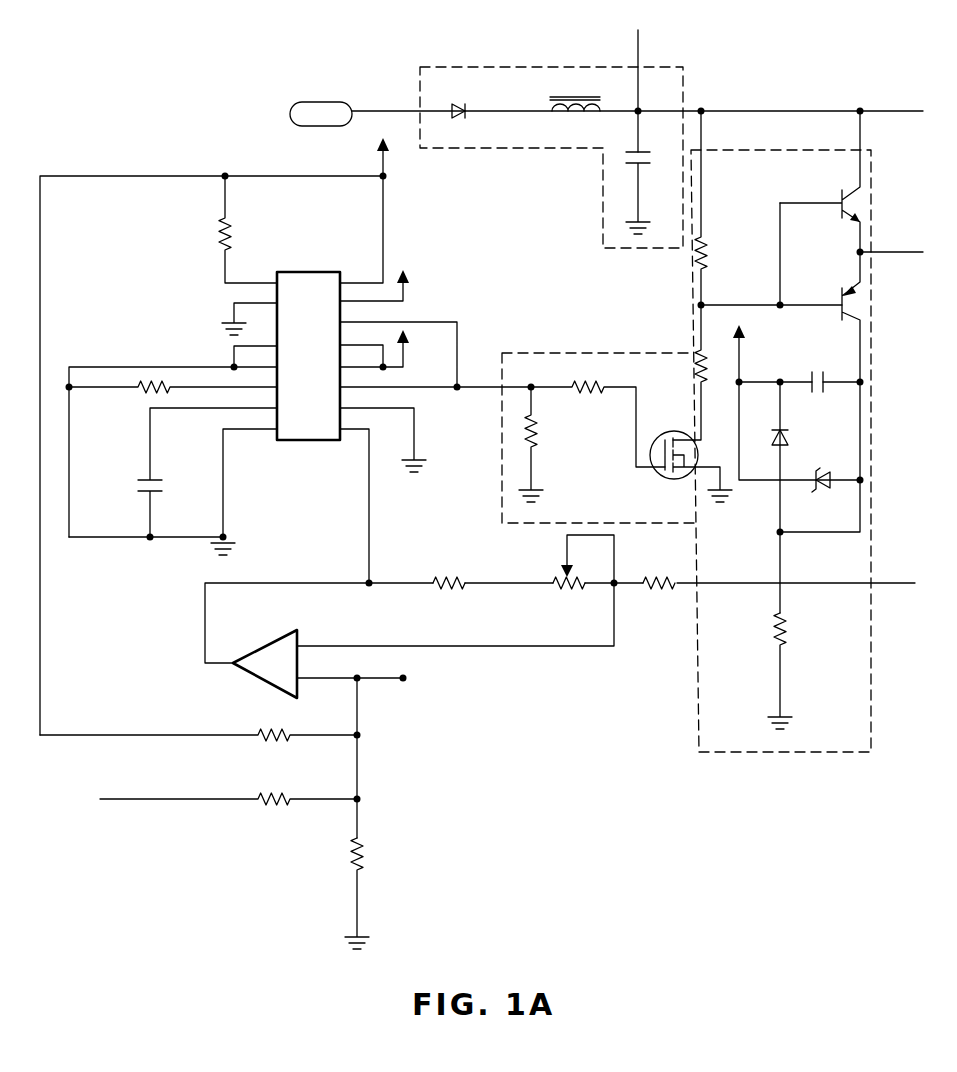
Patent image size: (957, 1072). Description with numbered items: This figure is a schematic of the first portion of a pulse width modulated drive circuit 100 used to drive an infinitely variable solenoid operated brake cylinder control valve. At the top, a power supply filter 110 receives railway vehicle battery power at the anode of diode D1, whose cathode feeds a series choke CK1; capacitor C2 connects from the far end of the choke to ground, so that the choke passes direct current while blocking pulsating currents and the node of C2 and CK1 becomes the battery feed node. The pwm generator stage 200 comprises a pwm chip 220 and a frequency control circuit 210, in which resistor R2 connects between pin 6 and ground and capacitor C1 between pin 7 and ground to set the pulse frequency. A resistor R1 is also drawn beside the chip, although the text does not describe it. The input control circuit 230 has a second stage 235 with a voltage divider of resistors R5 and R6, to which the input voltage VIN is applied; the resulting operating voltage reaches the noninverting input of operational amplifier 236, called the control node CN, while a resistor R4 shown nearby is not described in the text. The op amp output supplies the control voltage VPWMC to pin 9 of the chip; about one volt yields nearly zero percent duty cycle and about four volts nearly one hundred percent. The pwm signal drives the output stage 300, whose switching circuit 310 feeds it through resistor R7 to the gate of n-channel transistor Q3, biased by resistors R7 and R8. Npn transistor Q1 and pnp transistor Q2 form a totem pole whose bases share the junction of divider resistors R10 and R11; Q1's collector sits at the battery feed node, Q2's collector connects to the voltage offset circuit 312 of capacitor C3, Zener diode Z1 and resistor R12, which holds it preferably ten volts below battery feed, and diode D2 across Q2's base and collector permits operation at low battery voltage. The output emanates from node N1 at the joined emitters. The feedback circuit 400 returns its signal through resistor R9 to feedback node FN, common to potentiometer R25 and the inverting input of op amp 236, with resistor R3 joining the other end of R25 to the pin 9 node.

The pulse width modulated drive circuit 100 is at (236, 94).
The power supply filter 110 is at (490, 66).
The pwm generator stage 200 is at (434, 284).
The frequency control circuit 210 is at (108, 540).
The pwm chip 220 is at (285, 436).
The input control circuit 230 is at (415, 729).
The second stage of input control circuit 235 is at (157, 683).
The operational amplifier 236 is at (265, 683).
The output stage 300 is at (621, 326).
The switching circuit 310 is at (500, 470).
The voltage offset circuit 312 is at (760, 485).
The feedback circuit 400 is at (563, 664).
The pin 6 of pwm chip 6 is at (287, 389).
The pin 7 of pwm chip 7 is at (287, 412).
The pin 9 of pwm chip 9 is at (327, 431).
The resistor R1 is at (222, 234).
The resistor R2 is at (147, 395).
The resistor R3 is at (447, 590).
The resistor R4 is at (278, 742).
The resistor R5 is at (278, 805).
The resistor R6 is at (362, 847).
The resistor R7 is at (585, 392).
The resistor R8 is at (540, 428).
The resistor R9 is at (663, 607).
The resistor R10 is at (705, 250).
The resistor R11 is at (672, 372).
The resistor R12 is at (790, 637).
The potentiometer R25 is at (563, 574).
The capacitor C1 is at (138, 489).
The capacitor C2 is at (625, 152).
The capacitor C3 is at (816, 393).
The diode D1 is at (458, 120).
The diode D2 is at (775, 432).
The Zener diode Z1 is at (820, 488).
The npn transistor Q1 is at (838, 197).
The pnp transistor Q2 is at (838, 312).
The n-channel field effect transistor Q3 is at (672, 479).
The series choke CK1 is at (565, 96).
The node N1 is at (856, 253).
The feedback node FN is at (604, 588).
The control node CN is at (369, 681).
The input voltage VIN is at (66, 799).
The control voltage VPWMC is at (324, 508).